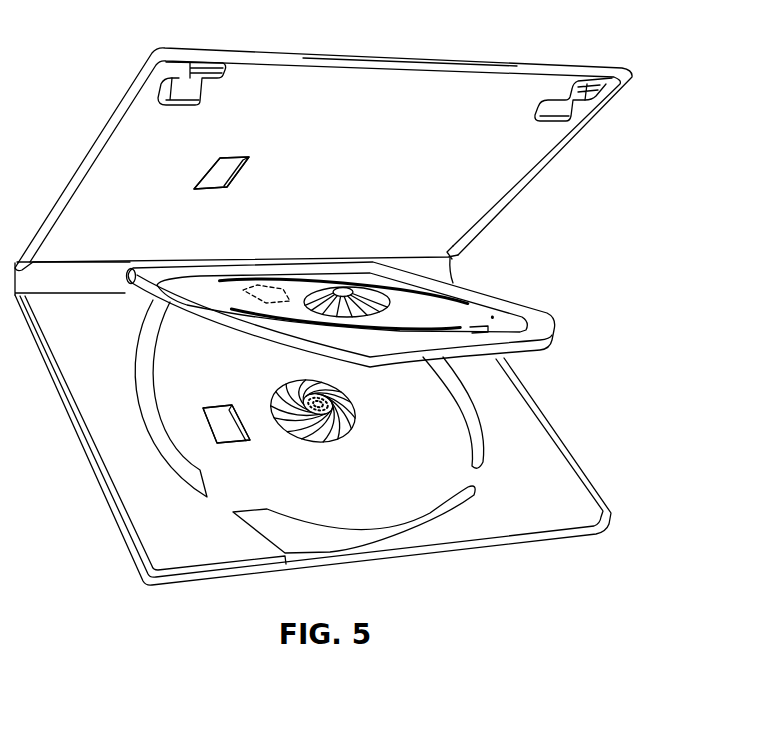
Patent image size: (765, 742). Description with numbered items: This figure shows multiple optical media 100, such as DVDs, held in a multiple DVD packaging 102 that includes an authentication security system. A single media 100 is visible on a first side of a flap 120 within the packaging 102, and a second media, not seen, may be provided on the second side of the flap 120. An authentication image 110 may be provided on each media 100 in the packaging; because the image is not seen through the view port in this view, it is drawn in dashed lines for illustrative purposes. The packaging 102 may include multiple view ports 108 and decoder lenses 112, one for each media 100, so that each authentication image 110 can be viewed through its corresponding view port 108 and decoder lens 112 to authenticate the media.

The optical media 100 is at (437, 303).
The packaging 102 is at (107, 124).
The view port 108 is at (233, 183).
The authentication image 110 is at (268, 290).
The decoder lens 112 is at (229, 160).
The flap 120 is at (547, 349).